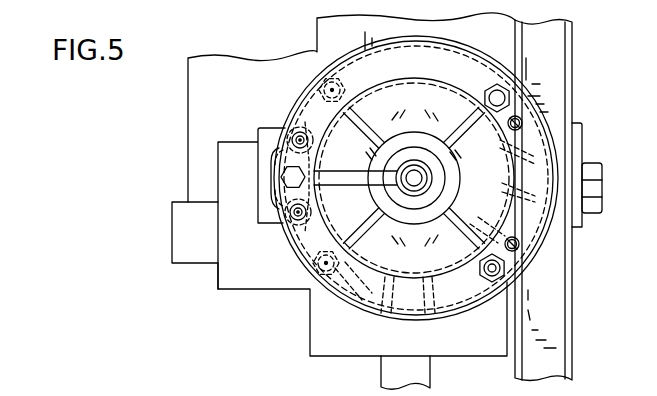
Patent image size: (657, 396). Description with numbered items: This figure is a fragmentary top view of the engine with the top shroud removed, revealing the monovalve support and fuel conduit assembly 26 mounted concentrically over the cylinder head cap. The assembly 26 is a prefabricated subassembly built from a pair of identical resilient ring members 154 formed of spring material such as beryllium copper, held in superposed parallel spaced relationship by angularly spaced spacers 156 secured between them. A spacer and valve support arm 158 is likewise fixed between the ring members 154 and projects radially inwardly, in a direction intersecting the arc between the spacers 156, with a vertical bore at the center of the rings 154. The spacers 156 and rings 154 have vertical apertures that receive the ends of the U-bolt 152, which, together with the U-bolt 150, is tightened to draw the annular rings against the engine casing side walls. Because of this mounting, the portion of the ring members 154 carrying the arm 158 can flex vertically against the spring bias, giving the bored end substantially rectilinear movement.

The monovalve support and fuel conduit assembly 26 is at (556, 145).
The U-bolt 150 is at (319, 89).
The U-bolt 152 is at (505, 96).
The resilient ring members 154 is at (534, 204).
The spacers 156 is at (522, 118).
The spacer and valve support arm 158 is at (354, 185).